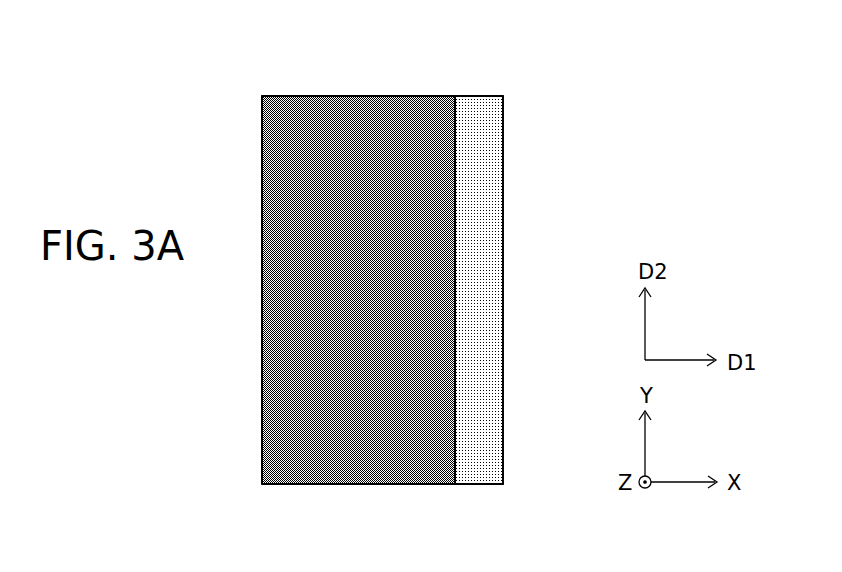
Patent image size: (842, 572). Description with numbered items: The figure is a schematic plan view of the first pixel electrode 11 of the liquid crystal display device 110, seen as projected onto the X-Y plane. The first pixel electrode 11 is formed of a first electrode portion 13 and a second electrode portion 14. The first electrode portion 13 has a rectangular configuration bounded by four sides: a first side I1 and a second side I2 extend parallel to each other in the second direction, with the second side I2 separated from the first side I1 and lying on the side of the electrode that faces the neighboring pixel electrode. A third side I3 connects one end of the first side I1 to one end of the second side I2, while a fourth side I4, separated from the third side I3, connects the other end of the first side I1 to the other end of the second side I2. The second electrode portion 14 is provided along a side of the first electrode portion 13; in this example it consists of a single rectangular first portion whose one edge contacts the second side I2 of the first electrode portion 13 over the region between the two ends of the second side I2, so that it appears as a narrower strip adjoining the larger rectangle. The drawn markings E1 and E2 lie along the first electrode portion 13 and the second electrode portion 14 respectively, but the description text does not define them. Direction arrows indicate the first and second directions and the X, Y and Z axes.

The liquid crystal display device 110 is at (712, 153).
The first pixel electrode 11 is at (552, 47).
The first electrode portion 13 is at (407, 97).
The second electrode portion 14 is at (483, 130).
The first side I1 is at (262, 165).
The second side I2 is at (455, 258).
The third side I3 is at (300, 96).
The fourth side I4 is at (300, 485).
The first end portion E1 is at (262, 322).
The second end portion E2 is at (483, 330).